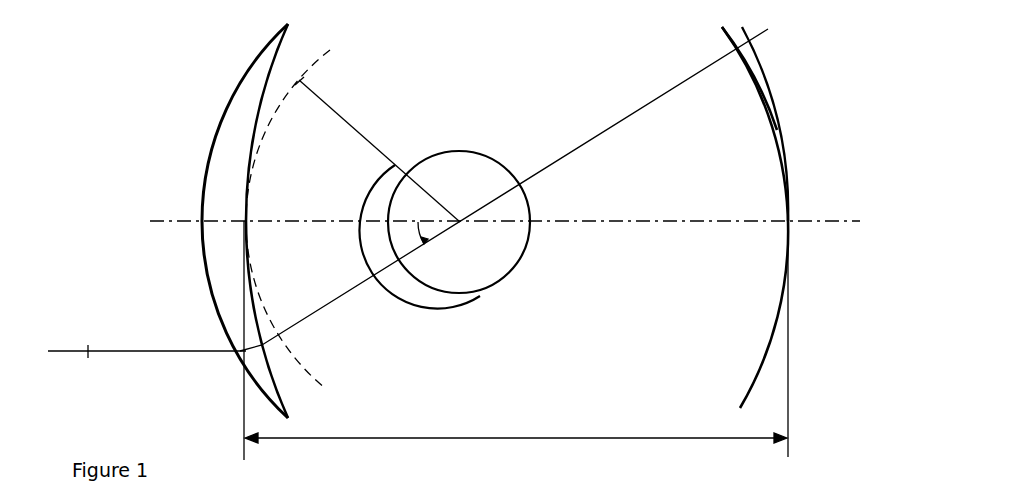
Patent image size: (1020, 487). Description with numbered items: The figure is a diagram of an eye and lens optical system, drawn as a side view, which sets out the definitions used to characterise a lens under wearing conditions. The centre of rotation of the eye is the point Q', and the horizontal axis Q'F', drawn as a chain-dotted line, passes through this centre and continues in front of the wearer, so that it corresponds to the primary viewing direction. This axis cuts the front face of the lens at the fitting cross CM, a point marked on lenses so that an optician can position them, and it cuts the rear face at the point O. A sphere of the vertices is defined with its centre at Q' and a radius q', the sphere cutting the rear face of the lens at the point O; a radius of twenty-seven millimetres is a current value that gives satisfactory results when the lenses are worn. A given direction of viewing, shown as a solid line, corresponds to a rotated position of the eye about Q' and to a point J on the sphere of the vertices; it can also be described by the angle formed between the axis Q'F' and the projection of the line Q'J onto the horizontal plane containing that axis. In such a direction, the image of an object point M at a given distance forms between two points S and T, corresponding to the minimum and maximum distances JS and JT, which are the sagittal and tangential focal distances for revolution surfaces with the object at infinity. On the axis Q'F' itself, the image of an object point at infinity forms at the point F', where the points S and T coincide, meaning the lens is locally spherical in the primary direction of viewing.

The fitting cross CM is at (225, 221).
The point of intersection of the rear face and the axis Q'F' O is at (235, 327).
The point on the sphere of the vertices J is at (288, 219).
The radius of the sphere of the vertices q' is at (377, 149).
The centre of rotation of the eye Q' is at (444, 230).
The point in the object space M is at (147, 338).
The point F' on the primary viewing axis F' is at (755, 242).
The point T (tangential focus) T is at (738, 78).
The point S (sagittal focus) S is at (765, 112).